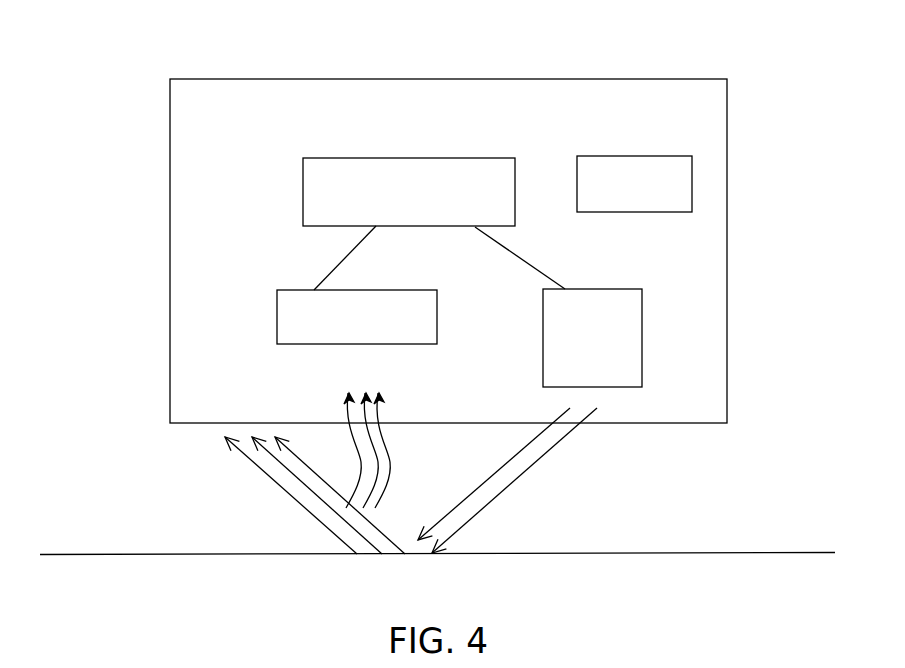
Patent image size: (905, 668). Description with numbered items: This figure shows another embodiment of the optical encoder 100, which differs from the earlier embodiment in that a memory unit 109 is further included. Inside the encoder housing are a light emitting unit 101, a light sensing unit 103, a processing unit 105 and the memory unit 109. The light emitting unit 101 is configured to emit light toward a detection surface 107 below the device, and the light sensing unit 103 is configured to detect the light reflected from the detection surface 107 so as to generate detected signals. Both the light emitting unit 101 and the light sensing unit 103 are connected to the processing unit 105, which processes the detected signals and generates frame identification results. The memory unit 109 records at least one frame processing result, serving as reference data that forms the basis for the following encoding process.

The optical encoder 100 is at (702, 44).
The light emitting unit 101 is at (637, 317).
The light sensing unit 103 is at (353, 300).
The processing unit 105 is at (409, 173).
The detection surface 107 is at (437, 572).
The memory unit 109 is at (677, 155).